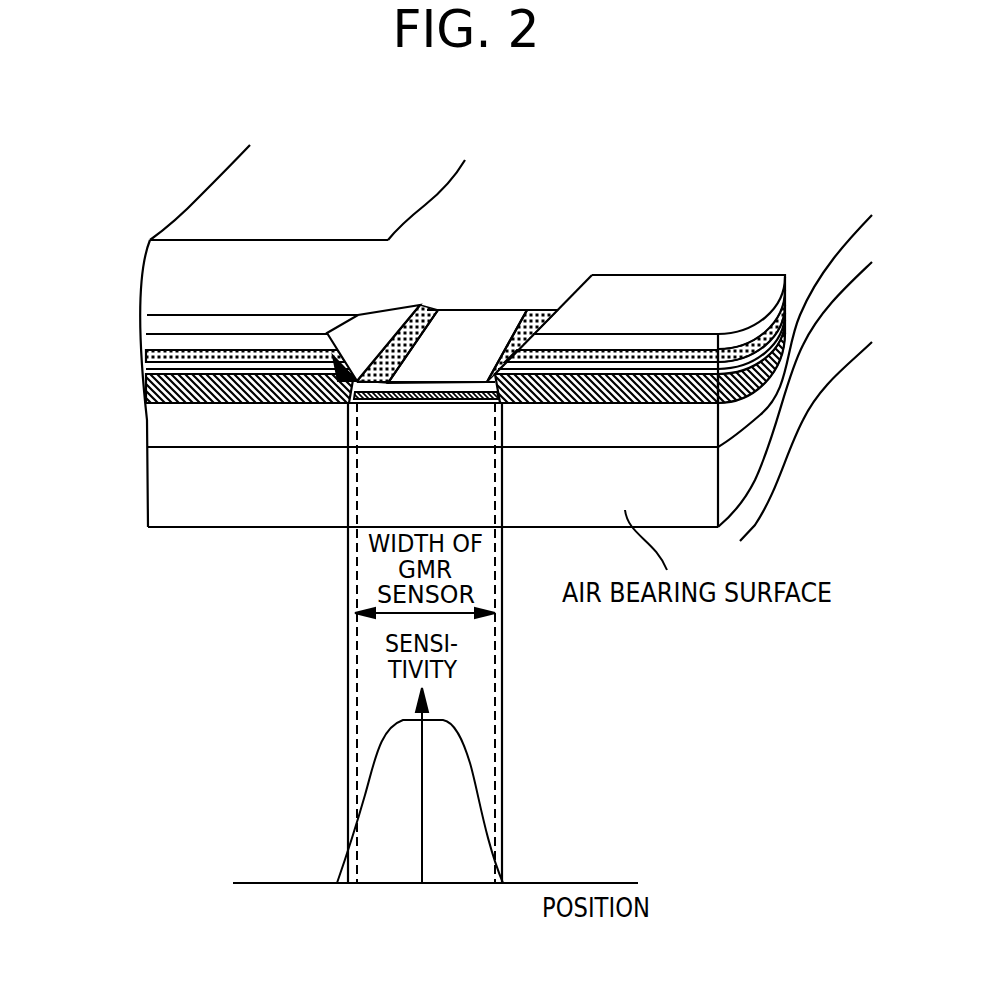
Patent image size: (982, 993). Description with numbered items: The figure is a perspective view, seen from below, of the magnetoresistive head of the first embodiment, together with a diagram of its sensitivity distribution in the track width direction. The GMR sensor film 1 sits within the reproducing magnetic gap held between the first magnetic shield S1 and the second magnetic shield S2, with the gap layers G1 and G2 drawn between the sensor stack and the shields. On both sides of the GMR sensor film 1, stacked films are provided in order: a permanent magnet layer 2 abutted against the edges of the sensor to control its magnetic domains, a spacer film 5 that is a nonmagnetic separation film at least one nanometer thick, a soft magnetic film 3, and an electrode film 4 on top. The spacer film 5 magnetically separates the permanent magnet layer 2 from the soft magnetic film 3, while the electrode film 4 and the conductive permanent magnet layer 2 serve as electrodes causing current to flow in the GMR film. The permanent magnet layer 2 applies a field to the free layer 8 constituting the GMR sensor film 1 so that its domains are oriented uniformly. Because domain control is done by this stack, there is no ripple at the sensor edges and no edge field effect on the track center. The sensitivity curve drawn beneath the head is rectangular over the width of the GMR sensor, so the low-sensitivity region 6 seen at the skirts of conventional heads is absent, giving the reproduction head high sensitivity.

The GMR sensor film 1 is at (478, 330).
The permanent magnet layer 2 is at (577, 400).
The soft magnetic film 3 is at (218, 352).
The electrode film 4 is at (308, 340).
The spacer film 5 is at (263, 370).
The low-sensitivity region 6 is at (388, 383).
The free layer 8 is at (383, 350).
The first magnetic shield S1 is at (163, 487).
The second magnetic shield S2 is at (163, 282).
The lower gap layer G1 is at (163, 429).
The upper gap layer G2 is at (163, 322).